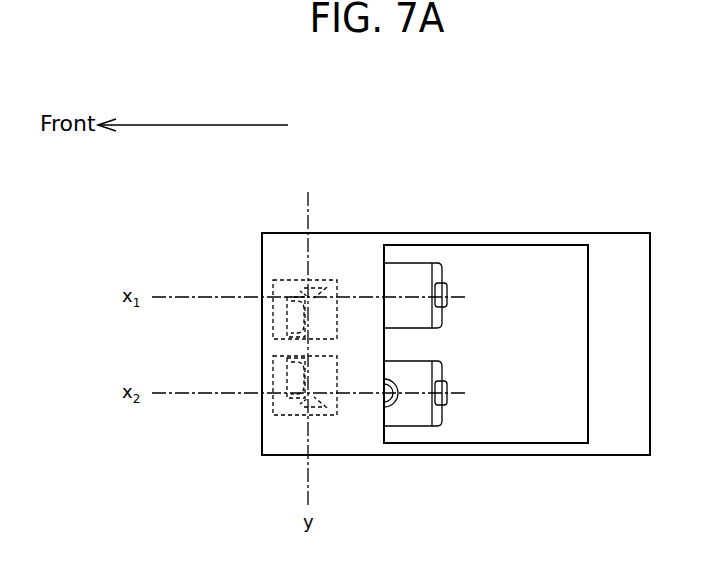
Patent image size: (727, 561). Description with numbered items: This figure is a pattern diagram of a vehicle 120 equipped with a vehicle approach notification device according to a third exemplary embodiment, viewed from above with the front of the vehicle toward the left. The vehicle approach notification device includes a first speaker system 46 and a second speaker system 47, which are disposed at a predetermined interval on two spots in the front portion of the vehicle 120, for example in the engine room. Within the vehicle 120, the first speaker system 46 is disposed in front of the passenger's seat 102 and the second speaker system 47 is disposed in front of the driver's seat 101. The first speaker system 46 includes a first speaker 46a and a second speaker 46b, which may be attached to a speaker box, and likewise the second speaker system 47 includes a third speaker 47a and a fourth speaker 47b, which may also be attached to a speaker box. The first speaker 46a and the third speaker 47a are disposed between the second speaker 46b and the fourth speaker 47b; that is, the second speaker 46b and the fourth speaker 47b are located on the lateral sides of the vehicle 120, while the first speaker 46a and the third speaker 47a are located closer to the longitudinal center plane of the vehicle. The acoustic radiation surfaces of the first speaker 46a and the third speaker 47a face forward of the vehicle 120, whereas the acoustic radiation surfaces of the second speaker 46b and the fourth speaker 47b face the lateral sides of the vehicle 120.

The vehicle 120 is at (458, 233).
The driver's seat 101 is at (413, 418).
The passenger's seat 102 is at (412, 270).
The first speaker system 46 is at (264, 266).
The first speaker 46a is at (290, 317).
The second speaker 46b is at (300, 288).
The second speaker system 47 is at (263, 428).
The third speaker 47a is at (290, 373).
The fourth speaker 47b is at (298, 408).